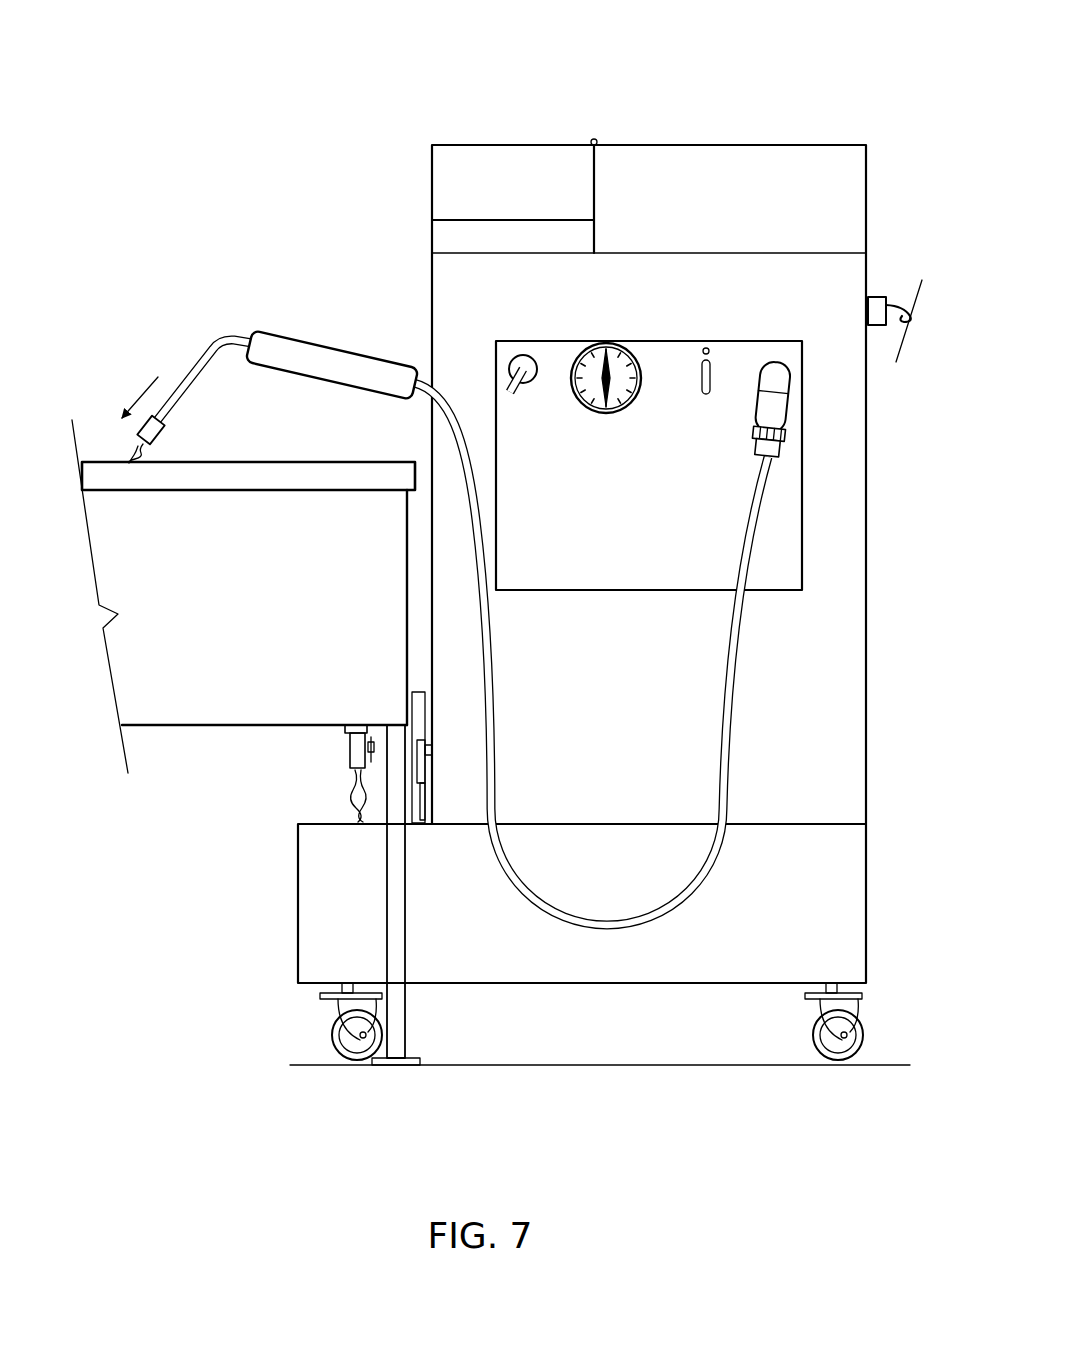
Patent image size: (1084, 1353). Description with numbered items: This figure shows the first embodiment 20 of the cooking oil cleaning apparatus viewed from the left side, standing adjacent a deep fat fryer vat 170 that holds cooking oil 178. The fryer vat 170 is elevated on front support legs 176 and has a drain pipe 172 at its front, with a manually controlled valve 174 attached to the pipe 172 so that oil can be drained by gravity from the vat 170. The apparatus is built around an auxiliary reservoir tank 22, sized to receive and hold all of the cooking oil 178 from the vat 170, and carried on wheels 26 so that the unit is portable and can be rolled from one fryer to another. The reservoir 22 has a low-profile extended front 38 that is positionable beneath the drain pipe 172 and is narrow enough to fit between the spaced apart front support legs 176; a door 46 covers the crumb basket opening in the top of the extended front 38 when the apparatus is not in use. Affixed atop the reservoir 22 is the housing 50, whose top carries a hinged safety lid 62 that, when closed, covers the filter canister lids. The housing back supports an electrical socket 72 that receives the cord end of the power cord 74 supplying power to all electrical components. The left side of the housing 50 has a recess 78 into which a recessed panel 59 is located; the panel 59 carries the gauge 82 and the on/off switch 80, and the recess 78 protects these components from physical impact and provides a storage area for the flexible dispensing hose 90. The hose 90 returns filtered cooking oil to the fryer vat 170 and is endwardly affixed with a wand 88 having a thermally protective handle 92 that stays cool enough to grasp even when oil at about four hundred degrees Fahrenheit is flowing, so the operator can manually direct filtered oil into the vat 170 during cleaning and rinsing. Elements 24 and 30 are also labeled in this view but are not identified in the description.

The first embodiment 20 is at (686, 110).
The auxiliary reservoir tank 22 is at (797, 932).
The base frame 24 is at (597, 990).
The wheels 26 is at (810, 1037).
The cabinet housing 30 is at (838, 907).
The extended front 38 is at (305, 823).
The door 46 is at (423, 692).
The housing 50 is at (771, 741).
The recessed panel 59 is at (620, 551).
The safety lid 62 is at (485, 160).
The electrical socket 72 is at (870, 297).
The power cord 74 is at (872, 330).
The recess 78 is at (783, 529).
The on/off switch 80 is at (520, 395).
The gauge 82 is at (617, 416).
The wand 88 is at (191, 353).
The flexible dispensing hose 90 is at (495, 747).
The thermally protective handle 92 is at (343, 350).
The deep fat fryer vat 170 is at (268, 591).
The drain pipe 172 is at (345, 751).
The manual flow control valve 174 is at (375, 724).
The front support legs 176 is at (397, 1012).
The cooking oil 178 is at (138, 457).